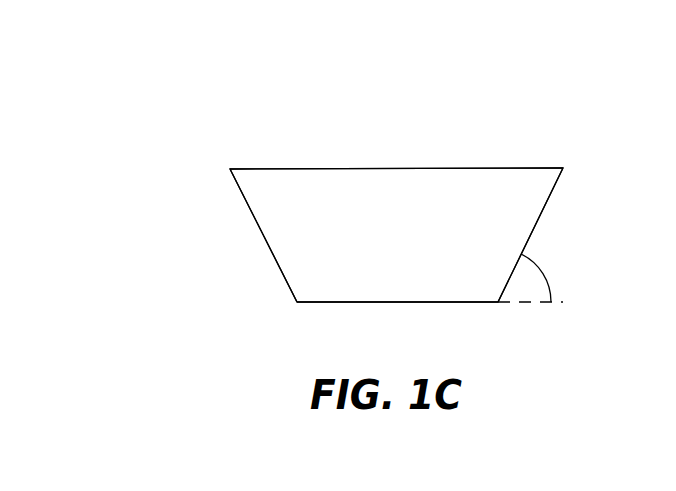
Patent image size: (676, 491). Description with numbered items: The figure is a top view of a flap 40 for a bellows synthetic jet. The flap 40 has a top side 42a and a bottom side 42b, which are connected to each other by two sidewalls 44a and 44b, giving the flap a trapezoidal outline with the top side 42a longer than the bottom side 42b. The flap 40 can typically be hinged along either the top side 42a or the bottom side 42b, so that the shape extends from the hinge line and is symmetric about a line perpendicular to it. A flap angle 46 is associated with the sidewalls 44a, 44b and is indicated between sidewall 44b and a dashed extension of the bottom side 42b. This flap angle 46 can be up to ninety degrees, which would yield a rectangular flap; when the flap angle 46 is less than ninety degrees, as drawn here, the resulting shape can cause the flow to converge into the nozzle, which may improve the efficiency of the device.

The flap 40 is at (220, 52).
The top side 42a is at (373, 168).
The bottom side 42b is at (372, 303).
The sidewall 44a is at (243, 198).
The sidewall 44b is at (550, 200).
The flap angle 46 is at (540, 267).